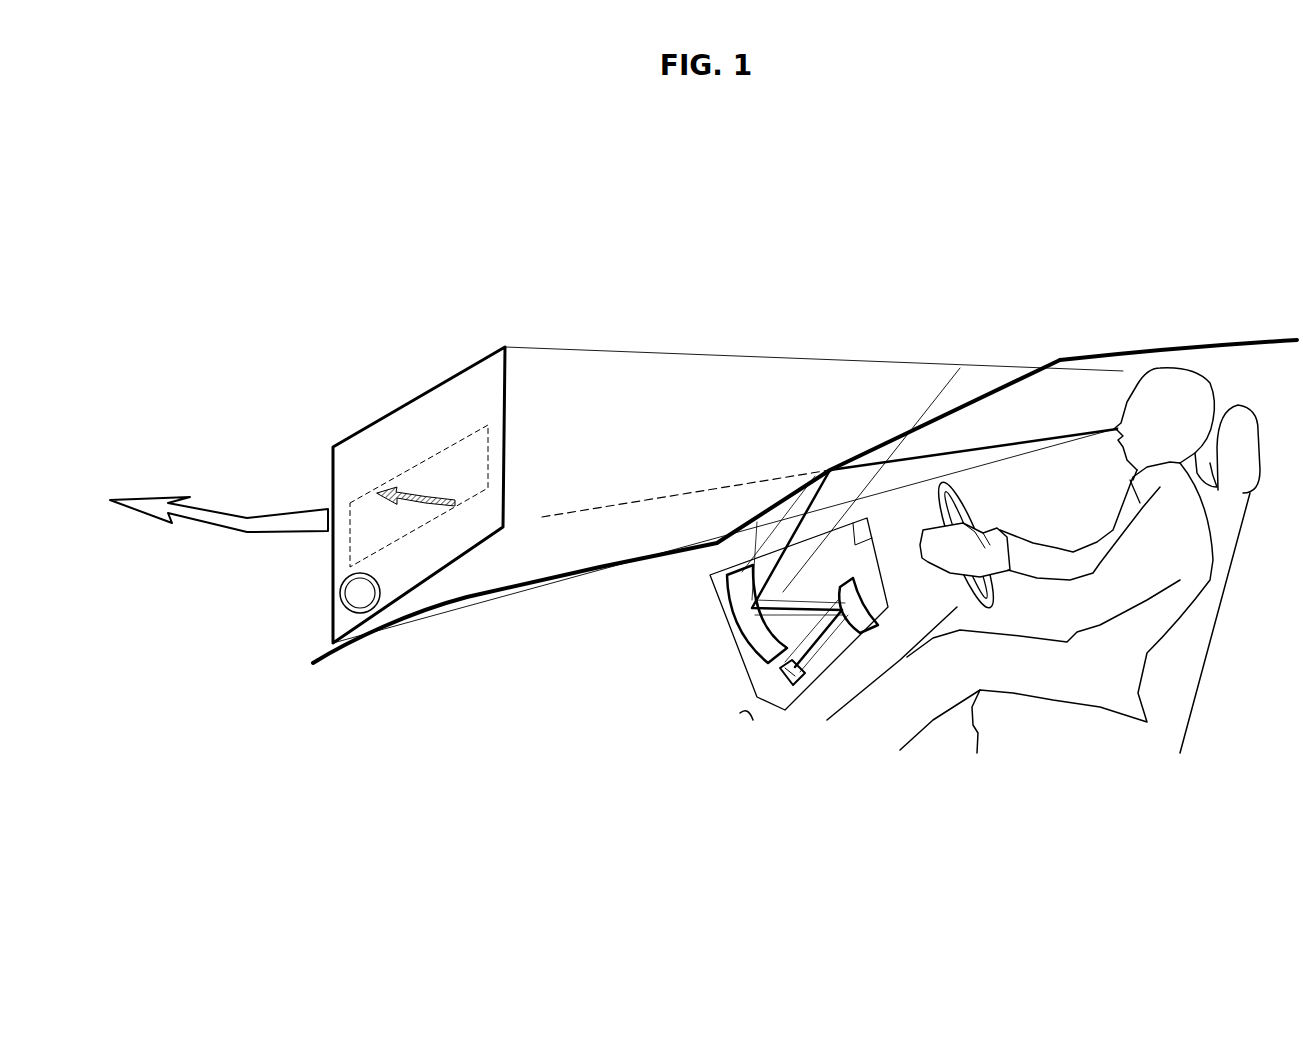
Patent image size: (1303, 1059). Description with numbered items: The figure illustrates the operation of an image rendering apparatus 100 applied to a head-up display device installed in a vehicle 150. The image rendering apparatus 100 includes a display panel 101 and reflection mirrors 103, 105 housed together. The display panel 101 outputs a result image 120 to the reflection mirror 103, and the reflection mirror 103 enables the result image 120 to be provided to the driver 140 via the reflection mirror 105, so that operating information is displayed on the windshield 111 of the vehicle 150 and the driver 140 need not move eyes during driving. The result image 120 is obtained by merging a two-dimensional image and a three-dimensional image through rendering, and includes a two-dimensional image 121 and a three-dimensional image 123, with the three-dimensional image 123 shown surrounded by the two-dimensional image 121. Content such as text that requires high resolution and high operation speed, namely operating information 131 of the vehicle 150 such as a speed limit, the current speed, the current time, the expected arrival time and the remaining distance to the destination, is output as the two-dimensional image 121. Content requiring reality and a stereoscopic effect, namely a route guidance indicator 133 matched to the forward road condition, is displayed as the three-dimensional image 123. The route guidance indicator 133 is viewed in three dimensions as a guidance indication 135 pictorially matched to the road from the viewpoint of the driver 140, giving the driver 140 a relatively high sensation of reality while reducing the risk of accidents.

The image rendering apparatus 100 is at (730, 631).
The display panel 101 is at (778, 673).
The reflection mirror 103 is at (853, 603).
The reflection mirror 105 is at (738, 590).
The windshield 111 is at (950, 410).
The result image 120 is at (505, 396).
The 2D image 121 is at (450, 557).
The 3D image 123 is at (488, 477).
The operating information 131 is at (341, 592).
The route guidance indicator 133 is at (443, 496).
The guidance indication 135 is at (150, 497).
The driver 140 is at (1207, 387).
The vehicle 150 is at (1233, 340).